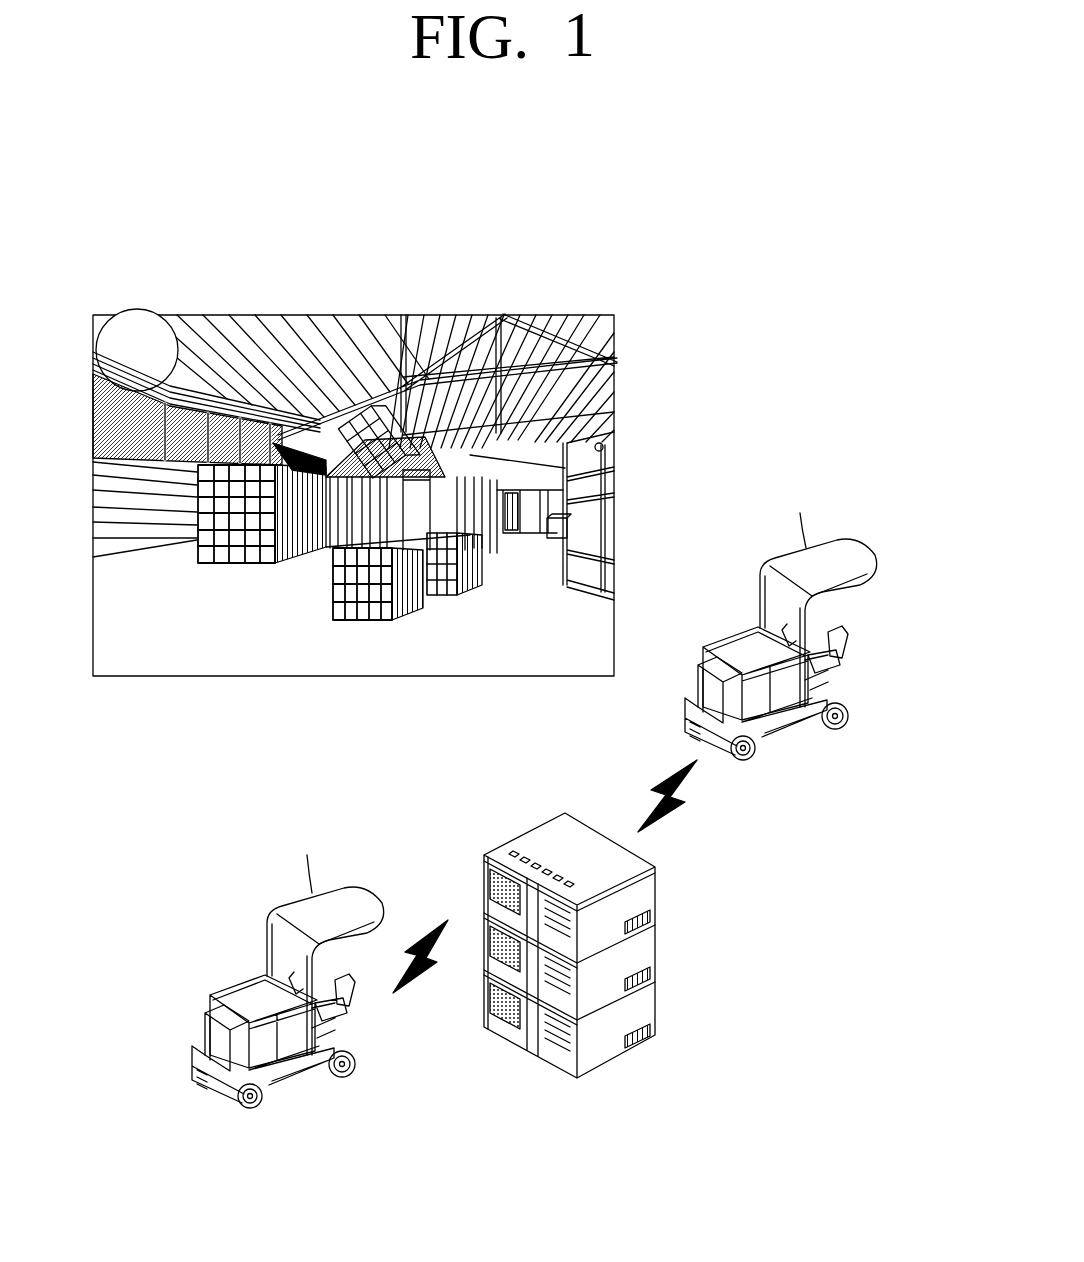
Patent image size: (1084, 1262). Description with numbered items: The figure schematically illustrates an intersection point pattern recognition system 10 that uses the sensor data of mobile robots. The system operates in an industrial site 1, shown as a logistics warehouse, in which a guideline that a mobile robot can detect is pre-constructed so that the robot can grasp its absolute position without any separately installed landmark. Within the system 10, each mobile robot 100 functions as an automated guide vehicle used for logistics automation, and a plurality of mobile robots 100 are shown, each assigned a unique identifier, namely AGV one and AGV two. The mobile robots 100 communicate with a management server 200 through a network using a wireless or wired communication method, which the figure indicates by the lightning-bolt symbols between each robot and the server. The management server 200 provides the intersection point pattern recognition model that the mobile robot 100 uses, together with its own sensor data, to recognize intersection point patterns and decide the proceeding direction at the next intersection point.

The industrial site 1 is at (352, 315).
The intersection point pattern recognition system 10 is at (627, 204).
The mobile robot 100 is at (874, 617).
The management server 200 is at (538, 828).